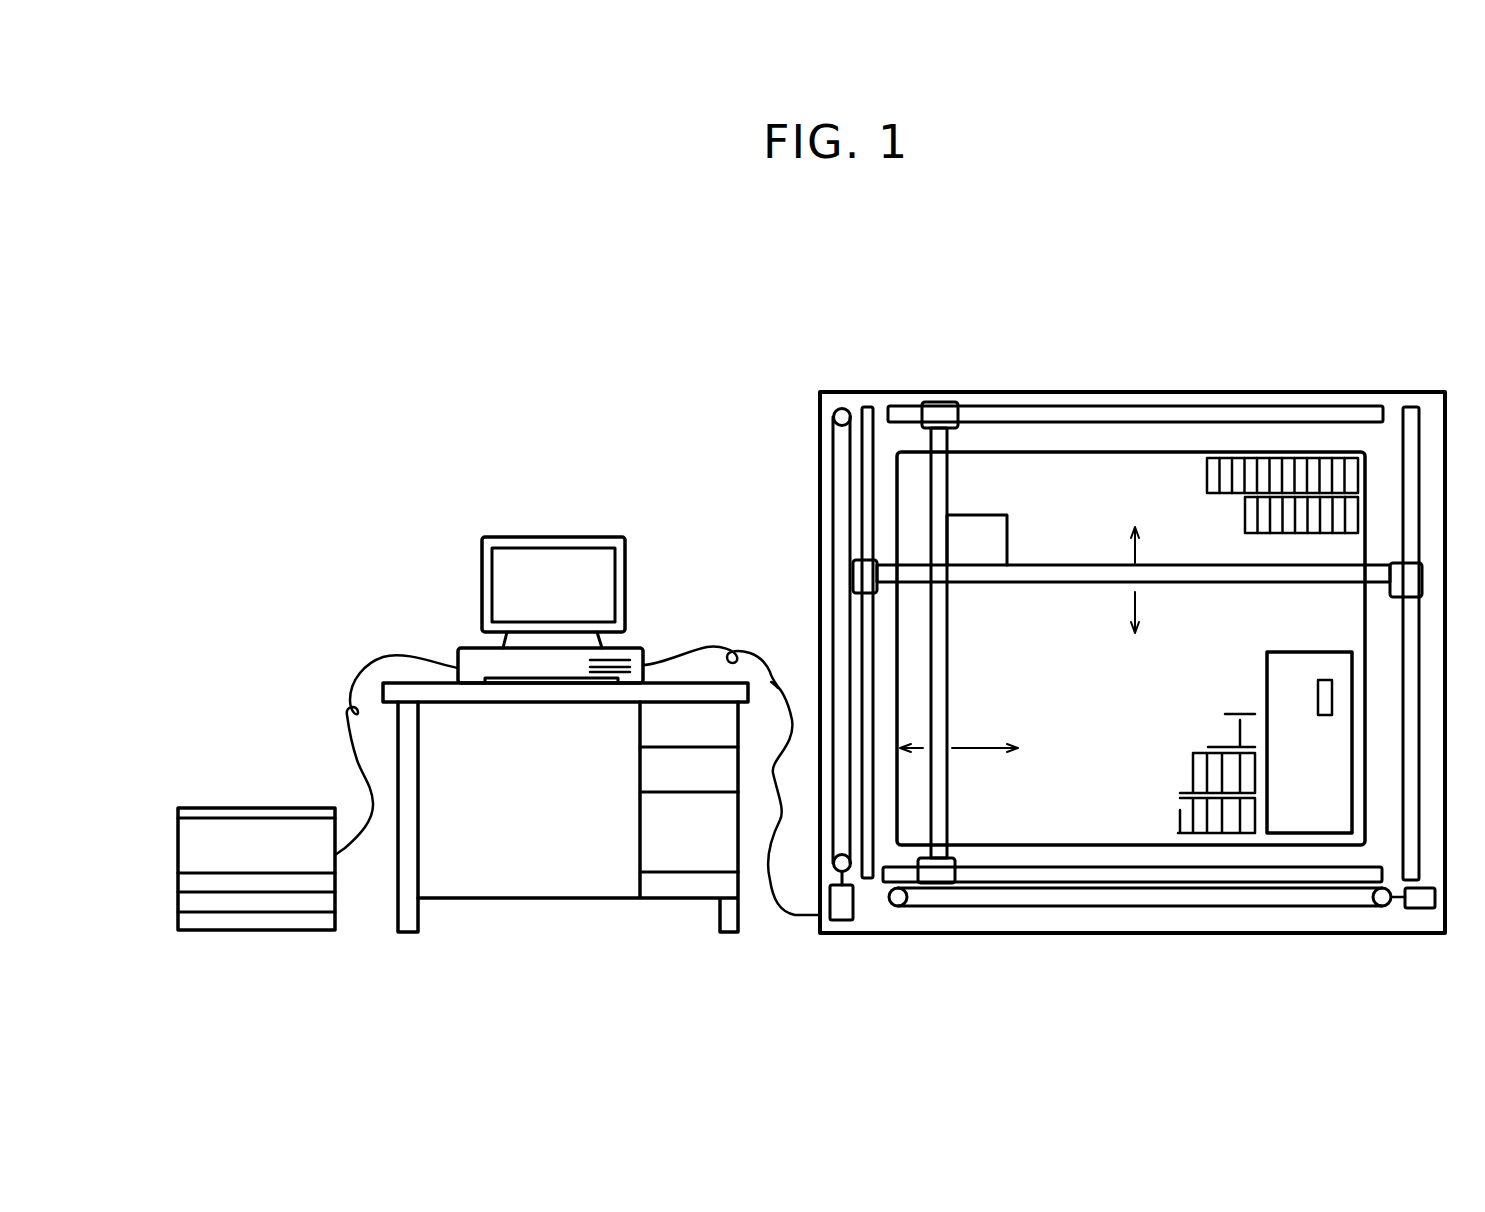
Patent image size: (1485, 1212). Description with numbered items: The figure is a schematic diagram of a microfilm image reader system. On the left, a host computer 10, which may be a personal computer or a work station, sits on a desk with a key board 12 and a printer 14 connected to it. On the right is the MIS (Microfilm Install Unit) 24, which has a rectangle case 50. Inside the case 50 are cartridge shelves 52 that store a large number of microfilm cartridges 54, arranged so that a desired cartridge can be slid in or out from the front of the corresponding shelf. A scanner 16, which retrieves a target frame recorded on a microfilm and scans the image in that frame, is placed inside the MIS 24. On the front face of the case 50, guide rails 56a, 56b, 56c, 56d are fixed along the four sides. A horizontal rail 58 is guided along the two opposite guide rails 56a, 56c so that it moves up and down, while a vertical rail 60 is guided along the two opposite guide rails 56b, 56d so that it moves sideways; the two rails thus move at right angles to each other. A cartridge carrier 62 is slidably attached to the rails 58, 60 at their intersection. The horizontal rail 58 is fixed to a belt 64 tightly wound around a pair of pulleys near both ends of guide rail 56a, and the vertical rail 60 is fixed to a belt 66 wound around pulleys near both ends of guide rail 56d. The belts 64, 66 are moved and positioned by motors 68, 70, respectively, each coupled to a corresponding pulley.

The host computer 10 is at (577, 537).
The key board 12 is at (547, 660).
The printer 14 is at (275, 808).
The scanner 16 is at (1302, 833).
The MIS (Microfilm Install Unit) 24 is at (1247, 272).
The rectangle case 50 is at (1020, 392).
The cartridge shelves 52 is at (1307, 453).
The microfilm cartridges 54 is at (1273, 470).
The guide rail 56a is at (868, 407).
The guide rail 56b is at (1183, 408).
The guide rail 56c is at (1420, 407).
The guide rail 56d is at (1090, 860).
The horizontal rail 58 is at (1052, 565).
The vertical rail 60 is at (948, 812).
The cartridge carrier 62 is at (973, 515).
The belt 64 is at (835, 428).
The belt 66 is at (1225, 907).
The motor 68 is at (853, 905).
The motor 70 is at (1418, 908).